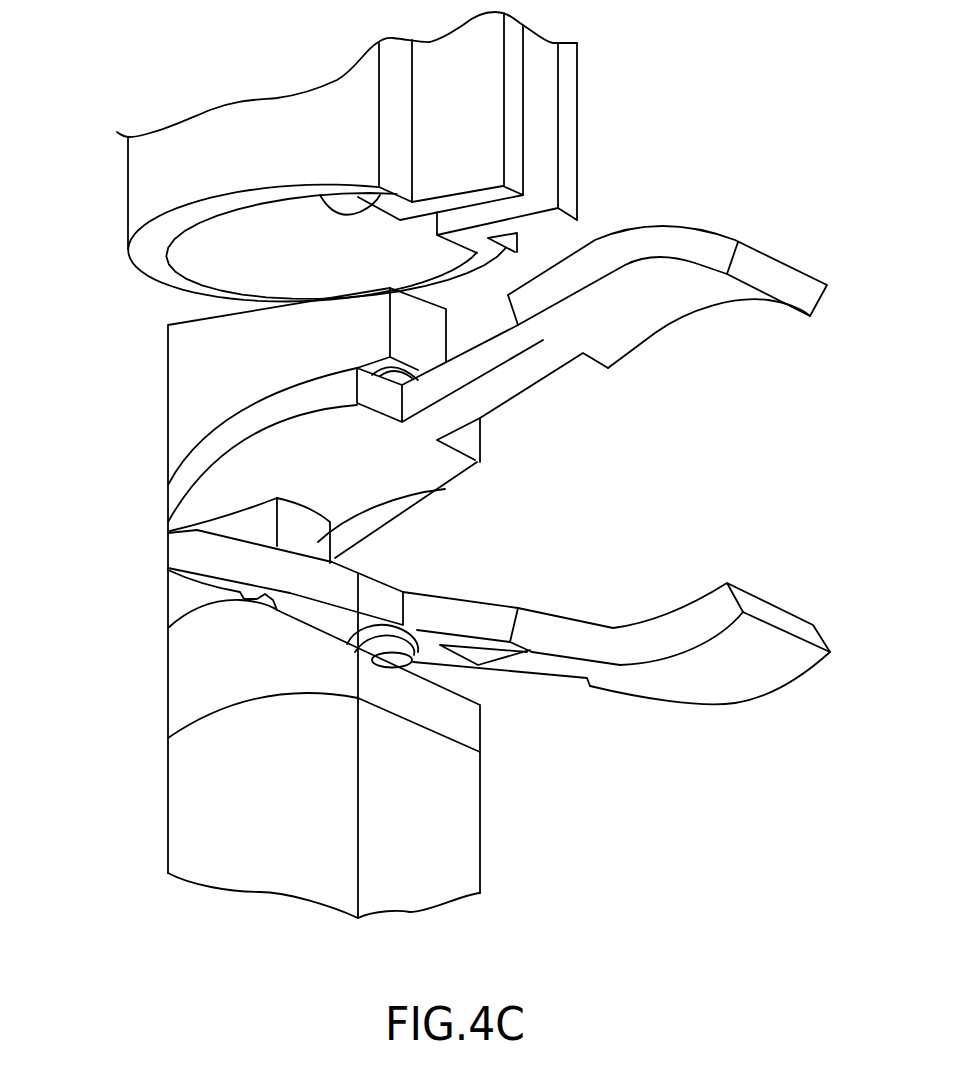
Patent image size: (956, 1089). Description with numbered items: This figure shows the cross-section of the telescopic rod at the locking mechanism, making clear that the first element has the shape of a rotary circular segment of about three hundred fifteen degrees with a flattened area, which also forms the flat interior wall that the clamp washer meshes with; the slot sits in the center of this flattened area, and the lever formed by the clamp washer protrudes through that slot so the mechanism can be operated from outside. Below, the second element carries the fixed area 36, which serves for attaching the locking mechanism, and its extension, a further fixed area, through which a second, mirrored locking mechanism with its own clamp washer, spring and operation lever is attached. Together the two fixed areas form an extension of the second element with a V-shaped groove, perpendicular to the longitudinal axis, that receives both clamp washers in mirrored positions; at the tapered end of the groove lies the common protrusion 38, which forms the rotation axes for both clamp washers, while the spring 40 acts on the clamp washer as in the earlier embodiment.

The fixed area 36 is at (192, 676).
The common protrusion 38 is at (445, 489).
The spring 40 is at (412, 630).